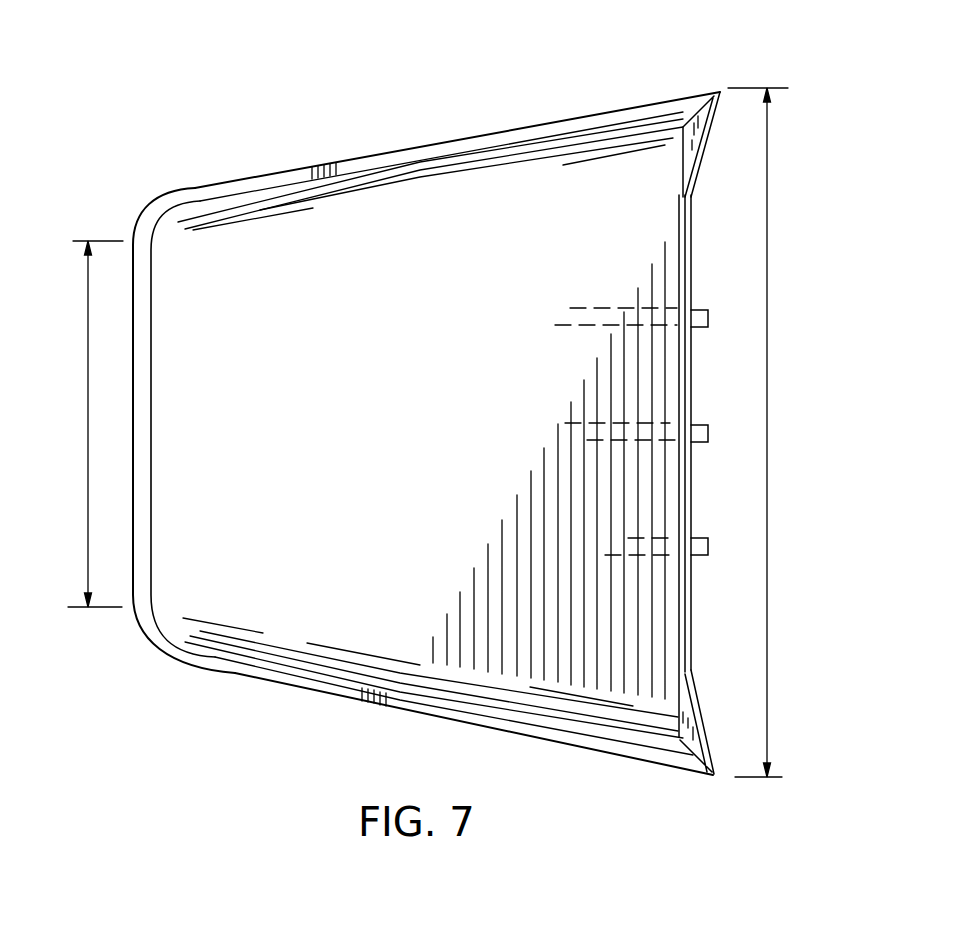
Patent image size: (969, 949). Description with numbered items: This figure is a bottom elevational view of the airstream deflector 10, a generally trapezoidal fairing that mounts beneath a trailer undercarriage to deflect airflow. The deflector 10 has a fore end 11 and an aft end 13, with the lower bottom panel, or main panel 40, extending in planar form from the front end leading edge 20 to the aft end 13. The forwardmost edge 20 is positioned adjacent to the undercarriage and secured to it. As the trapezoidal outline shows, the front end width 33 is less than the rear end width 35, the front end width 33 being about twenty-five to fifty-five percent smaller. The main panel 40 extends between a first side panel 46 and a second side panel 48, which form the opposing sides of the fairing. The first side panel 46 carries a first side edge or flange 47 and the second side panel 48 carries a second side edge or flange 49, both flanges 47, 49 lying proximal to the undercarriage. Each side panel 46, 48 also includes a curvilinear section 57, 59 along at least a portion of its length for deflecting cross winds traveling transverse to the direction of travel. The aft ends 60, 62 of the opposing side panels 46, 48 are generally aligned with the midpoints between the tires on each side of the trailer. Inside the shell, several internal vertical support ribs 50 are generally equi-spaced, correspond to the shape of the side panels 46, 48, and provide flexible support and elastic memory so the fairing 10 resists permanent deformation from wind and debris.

The airstream deflector 10 is at (282, 118).
The fore end 11 is at (131, 327).
The aft end 13 is at (700, 489).
The forwardmost edge 20 is at (132, 473).
The front end width 33 is at (85, 403).
The rear end width 35 is at (769, 383).
The main panel 40 is at (378, 253).
The first side panel 46 is at (587, 132).
The first side edge or flange 47 is at (432, 143).
The second side panel 48 is at (517, 710).
The second side edge or flange 49 is at (338, 690).
The internal vertical support ribs 50 is at (708, 311).
The curvilinear section 57 is at (473, 167).
The curvilinear section 59 is at (572, 712).
The aft end of first side panel 60 is at (719, 90).
The aft end of second side panel 62 is at (714, 774).